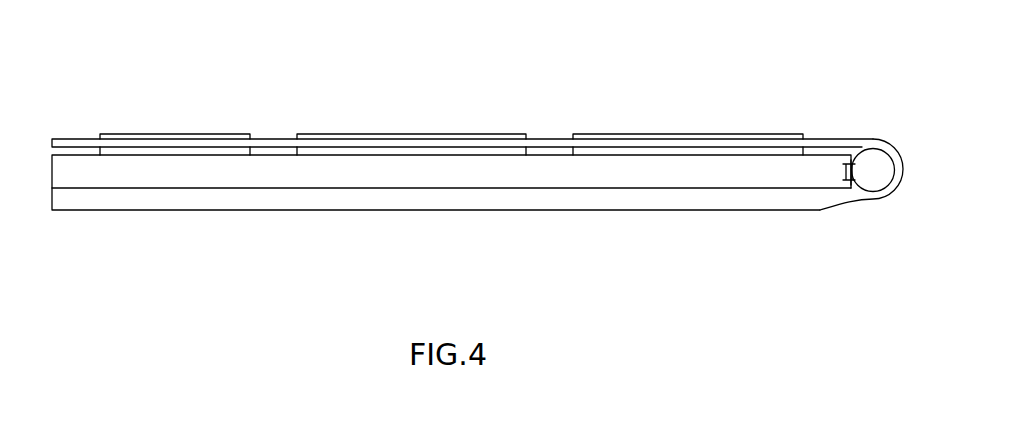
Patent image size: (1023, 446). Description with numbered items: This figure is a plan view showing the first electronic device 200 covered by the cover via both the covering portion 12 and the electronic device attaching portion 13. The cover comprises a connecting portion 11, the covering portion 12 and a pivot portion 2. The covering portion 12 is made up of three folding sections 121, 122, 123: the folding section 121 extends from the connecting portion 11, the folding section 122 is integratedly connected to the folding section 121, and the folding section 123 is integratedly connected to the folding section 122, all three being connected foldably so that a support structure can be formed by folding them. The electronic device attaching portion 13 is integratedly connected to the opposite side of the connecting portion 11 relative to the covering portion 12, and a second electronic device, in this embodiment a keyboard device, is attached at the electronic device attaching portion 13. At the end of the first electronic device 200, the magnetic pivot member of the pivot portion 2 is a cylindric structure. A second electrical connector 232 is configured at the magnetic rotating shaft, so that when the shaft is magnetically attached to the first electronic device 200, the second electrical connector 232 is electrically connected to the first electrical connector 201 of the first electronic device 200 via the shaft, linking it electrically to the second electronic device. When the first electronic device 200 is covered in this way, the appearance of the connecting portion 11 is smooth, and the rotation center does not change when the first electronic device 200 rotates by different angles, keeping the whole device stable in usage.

The pivot portion 2 is at (872, 162).
The connecting portion 11 is at (910, 162).
The covering portion 12 is at (77, 147).
The electronic device attaching portion 13 is at (117, 202).
The folding section 121 is at (692, 127).
The folding section 122 is at (419, 127).
The folding section 123 is at (186, 126).
The first electronic device 200 is at (240, 173).
The first electrical connector 201 is at (853, 170).
The second electrical connector 232 is at (855, 171).